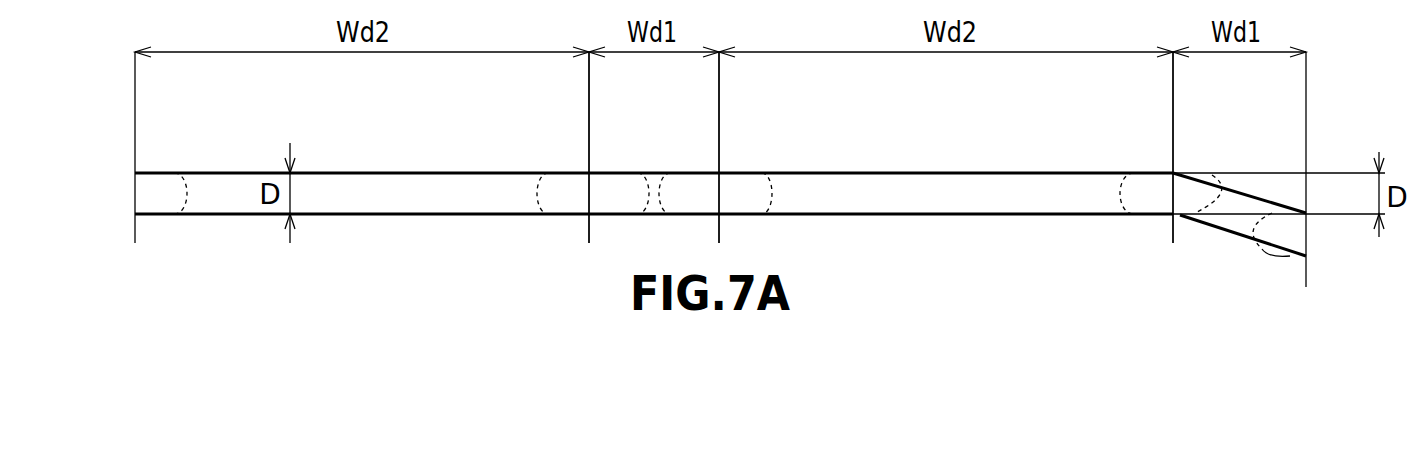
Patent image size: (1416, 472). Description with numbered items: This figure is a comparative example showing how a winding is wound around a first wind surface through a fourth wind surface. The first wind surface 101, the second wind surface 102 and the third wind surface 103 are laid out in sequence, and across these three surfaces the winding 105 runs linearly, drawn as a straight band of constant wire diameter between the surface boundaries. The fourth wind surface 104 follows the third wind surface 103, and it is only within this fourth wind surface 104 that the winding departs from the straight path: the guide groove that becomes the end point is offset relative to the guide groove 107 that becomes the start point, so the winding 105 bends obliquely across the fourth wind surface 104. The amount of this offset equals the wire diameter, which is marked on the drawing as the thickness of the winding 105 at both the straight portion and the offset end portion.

The first wind surface 101 is at (342, 133).
The second wind surface 102 is at (677, 133).
The third wind surface 103 is at (927, 133).
The fourth wind surface 104 is at (1262, 133).
The winding 105 is at (403, 213).
The guide groove (start point) 107 is at (1145, 192).